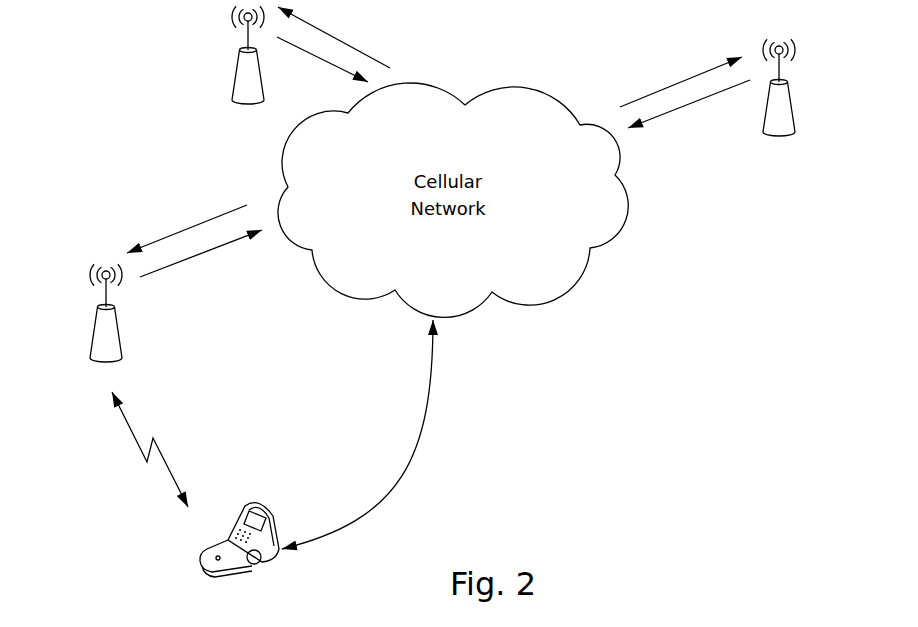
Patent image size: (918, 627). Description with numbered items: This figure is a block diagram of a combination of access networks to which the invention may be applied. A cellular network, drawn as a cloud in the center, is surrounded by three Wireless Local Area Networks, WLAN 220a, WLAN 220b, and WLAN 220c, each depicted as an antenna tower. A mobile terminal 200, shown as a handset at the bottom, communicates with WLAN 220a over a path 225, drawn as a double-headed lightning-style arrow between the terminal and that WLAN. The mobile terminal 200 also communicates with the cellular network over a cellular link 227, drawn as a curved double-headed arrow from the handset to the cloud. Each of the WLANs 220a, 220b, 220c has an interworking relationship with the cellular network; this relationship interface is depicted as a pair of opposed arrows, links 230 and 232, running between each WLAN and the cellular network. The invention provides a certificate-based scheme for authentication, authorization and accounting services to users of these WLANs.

The mobile terminal 200 is at (239, 549).
The Wireless Local Area Network (WLAN) 220a is at (69, 313).
The Wireless Local Area Network (WLAN) 220b is at (212, 55).
The Wireless Local Area Network (WLAN) 220c is at (815, 87).
The path 225 is at (155, 449).
The cellular link 227 is at (370, 434).
The link 230 is at (445, 157).
The link 232 is at (434, 130).